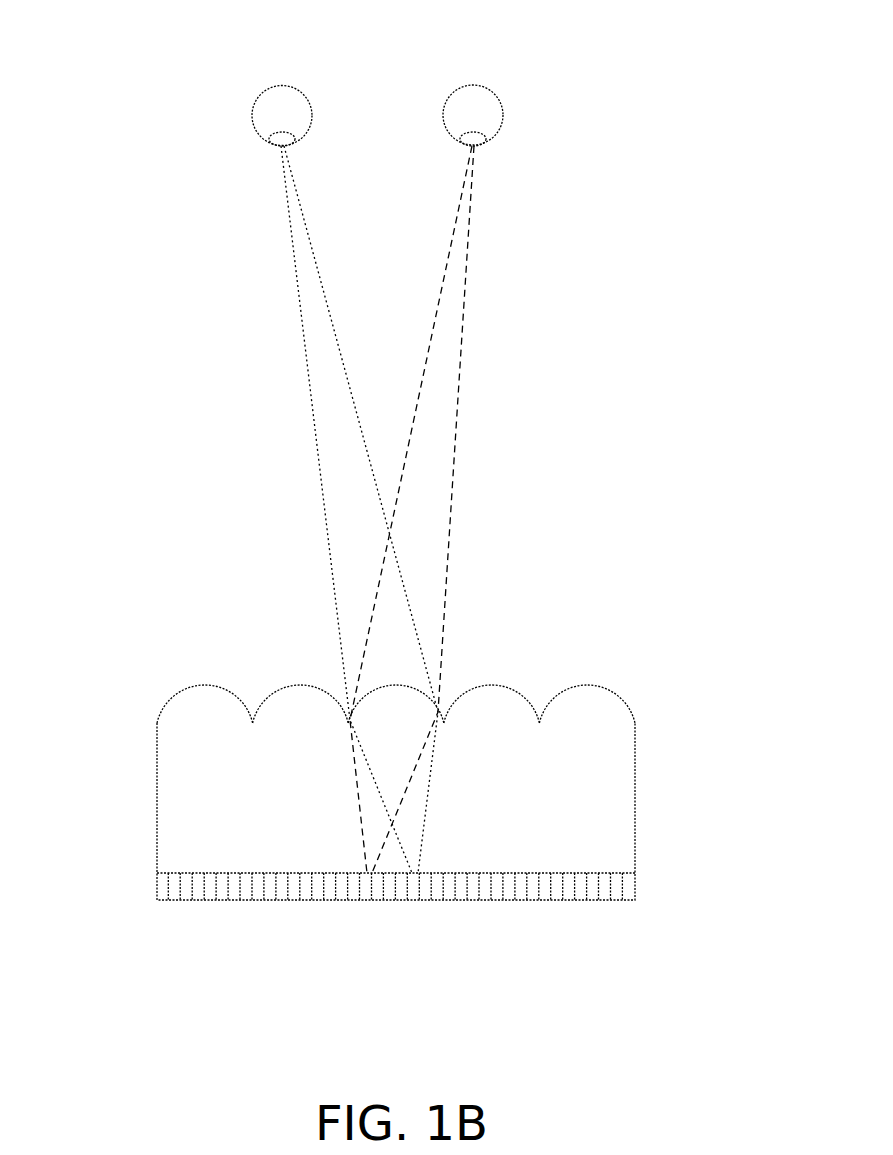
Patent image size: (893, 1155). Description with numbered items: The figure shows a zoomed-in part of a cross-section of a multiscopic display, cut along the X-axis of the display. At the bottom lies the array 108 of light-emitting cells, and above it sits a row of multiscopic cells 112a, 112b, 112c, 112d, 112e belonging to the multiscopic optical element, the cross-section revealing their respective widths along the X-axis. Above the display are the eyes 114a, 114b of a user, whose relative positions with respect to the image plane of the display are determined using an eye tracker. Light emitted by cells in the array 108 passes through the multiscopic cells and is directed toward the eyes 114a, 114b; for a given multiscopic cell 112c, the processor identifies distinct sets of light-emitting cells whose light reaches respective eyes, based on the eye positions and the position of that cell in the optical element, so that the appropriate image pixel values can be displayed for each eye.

The array of light-emitting cells 108 is at (636, 887).
The multiscopic cell 112a is at (197, 705).
The multiscopic cell 112b is at (275, 705).
The multiscopic cell 112c is at (382, 693).
The multiscopic cell 112d is at (523, 687).
The multiscopic cell 112e is at (612, 703).
The eye 114a is at (312, 118).
The eye 114b is at (502, 122).